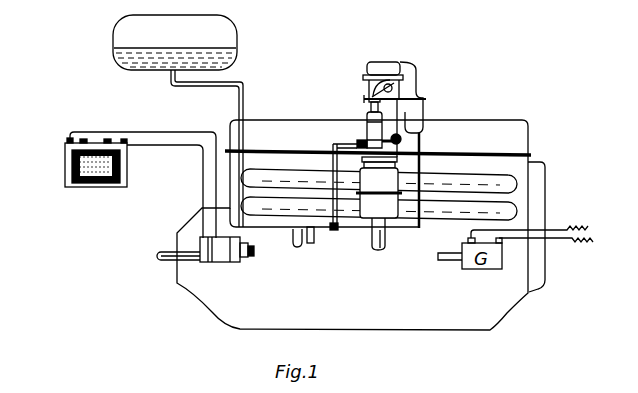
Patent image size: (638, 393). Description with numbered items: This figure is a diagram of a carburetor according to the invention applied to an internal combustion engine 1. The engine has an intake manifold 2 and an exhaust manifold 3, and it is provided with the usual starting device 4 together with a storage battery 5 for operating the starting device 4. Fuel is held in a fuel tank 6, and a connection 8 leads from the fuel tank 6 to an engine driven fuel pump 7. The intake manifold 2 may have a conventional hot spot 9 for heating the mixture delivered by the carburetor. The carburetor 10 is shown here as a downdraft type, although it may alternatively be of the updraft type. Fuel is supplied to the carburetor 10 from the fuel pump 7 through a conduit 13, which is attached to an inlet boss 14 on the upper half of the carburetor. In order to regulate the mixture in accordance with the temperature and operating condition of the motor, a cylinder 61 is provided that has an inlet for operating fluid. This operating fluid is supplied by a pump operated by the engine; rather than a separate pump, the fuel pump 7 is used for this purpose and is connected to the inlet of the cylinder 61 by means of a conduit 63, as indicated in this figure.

The internal combustion engine 1 is at (515, 133).
The intake manifold 2 is at (473, 176).
The exhaust manifold 3 is at (470, 219).
The starting device 4 is at (222, 252).
The storage battery 5 is at (65, 173).
The fuel tank 6 is at (219, 43).
The fuel pump 7 is at (308, 244).
The connection 8 is at (242, 100).
The hot spot 9 is at (379, 203).
The carburetor 10 is at (368, 82).
The conduit 13 is at (421, 133).
The inlet boss 14 is at (423, 95).
The cylinder 61 is at (366, 124).
The conduit 63 is at (332, 162).